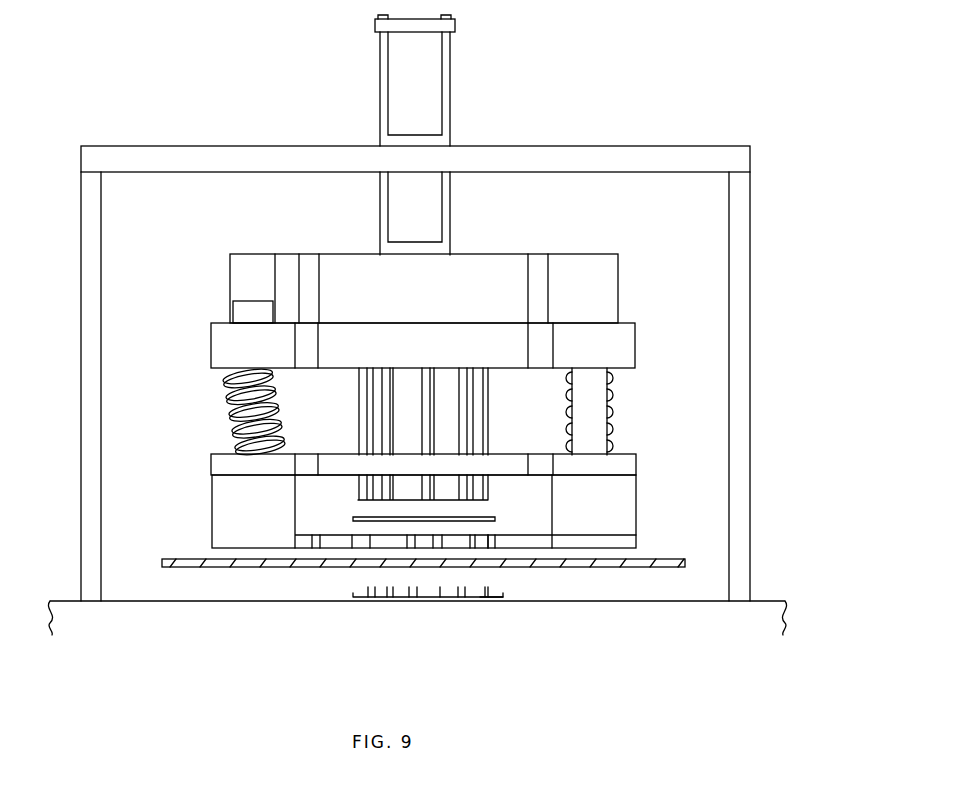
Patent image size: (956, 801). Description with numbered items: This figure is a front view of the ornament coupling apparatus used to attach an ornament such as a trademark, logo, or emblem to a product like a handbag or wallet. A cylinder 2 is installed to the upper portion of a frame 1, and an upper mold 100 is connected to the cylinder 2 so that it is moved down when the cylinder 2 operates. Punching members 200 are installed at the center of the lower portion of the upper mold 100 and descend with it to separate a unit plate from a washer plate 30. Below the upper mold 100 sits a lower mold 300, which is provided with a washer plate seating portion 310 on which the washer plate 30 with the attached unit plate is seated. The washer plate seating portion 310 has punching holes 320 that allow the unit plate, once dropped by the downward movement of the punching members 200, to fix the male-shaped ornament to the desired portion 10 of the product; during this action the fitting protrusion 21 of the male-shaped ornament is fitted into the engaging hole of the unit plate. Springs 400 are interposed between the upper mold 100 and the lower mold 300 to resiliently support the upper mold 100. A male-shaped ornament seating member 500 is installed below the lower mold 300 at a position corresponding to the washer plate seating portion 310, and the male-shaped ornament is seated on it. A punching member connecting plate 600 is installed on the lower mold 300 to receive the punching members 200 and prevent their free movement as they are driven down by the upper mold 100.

The frame 1 is at (740, 241).
The cylinder 2 is at (432, 76).
The desired portion 10 is at (192, 567).
The fitting protrusion 21 is at (403, 597).
The washer plate 30 is at (495, 519).
The upper mold 100 is at (350, 345).
The punching members 200 is at (445, 405).
The lower mold 300 is at (218, 512).
The washer plate seating portion 310 is at (488, 535).
The punching holes 320 is at (356, 540).
The spring 400 is at (228, 378).
The male-shaped ornament seating member 500 is at (495, 597).
The punching member connecting plate 600 is at (218, 465).